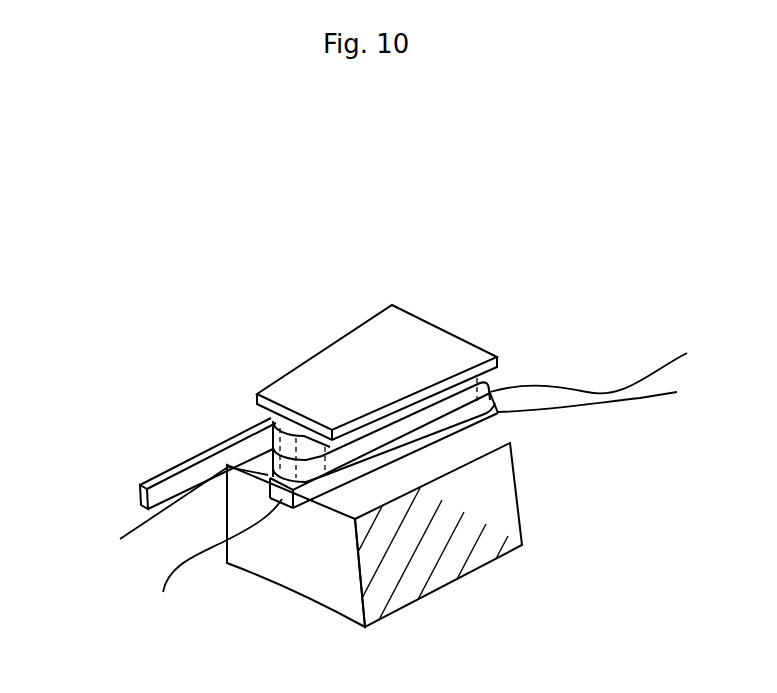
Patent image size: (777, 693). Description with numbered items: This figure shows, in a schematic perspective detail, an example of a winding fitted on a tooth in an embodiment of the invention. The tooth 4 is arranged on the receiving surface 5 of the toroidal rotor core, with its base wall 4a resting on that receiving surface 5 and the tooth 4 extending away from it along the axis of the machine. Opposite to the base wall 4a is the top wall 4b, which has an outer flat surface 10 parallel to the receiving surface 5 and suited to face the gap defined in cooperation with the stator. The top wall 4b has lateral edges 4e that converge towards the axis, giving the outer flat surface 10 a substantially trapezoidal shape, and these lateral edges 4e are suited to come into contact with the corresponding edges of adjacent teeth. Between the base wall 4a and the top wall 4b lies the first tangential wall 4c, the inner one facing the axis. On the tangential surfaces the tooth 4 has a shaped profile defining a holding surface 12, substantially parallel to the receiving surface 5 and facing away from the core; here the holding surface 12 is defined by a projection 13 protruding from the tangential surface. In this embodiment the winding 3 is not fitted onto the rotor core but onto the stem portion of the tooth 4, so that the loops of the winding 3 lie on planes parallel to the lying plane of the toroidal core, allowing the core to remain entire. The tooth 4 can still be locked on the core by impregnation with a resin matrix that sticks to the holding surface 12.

The winding 3 is at (150, 477).
The tooth 4 is at (352, 377).
The base wall 4a is at (432, 439).
The top wall 4b is at (330, 362).
The first tangential wall 4c is at (268, 424).
The lateral edge 4e is at (258, 403).
The receiving surface 5 is at (500, 448).
The outer flat surface 10 is at (369, 330).
The holding surface 12 is at (405, 460).
The projection 13 is at (433, 513).